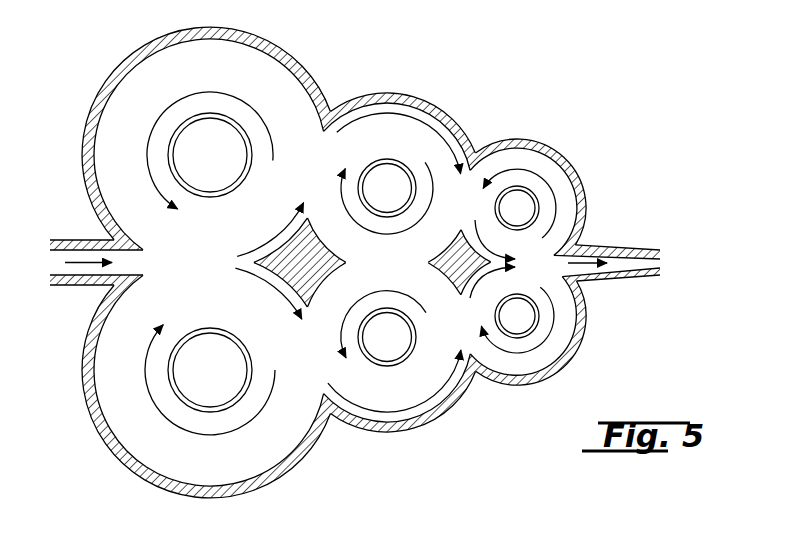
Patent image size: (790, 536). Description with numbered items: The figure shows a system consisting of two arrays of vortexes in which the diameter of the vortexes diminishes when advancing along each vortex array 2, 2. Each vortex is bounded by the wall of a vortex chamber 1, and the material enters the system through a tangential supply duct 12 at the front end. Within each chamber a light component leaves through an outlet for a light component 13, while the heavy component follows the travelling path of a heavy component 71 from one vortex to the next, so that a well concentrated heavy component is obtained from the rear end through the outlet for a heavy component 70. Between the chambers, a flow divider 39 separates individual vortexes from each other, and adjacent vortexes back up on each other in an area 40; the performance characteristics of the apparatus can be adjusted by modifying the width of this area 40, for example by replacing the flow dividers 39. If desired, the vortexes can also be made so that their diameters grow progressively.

The wall of a vortex chamber 1 is at (128, 72).
The general running direction of a vortex 2 is at (145, 157).
The tangential supply duct 12 is at (84, 249).
The outlet for a light component 13 is at (203, 182).
The flow divider 39 is at (325, 287).
The area where adjacent vortexes back up on each other 40 is at (319, 170).
The outlet for a heavy component 70 is at (646, 259).
The travelling path of a heavy component 71 is at (279, 230).